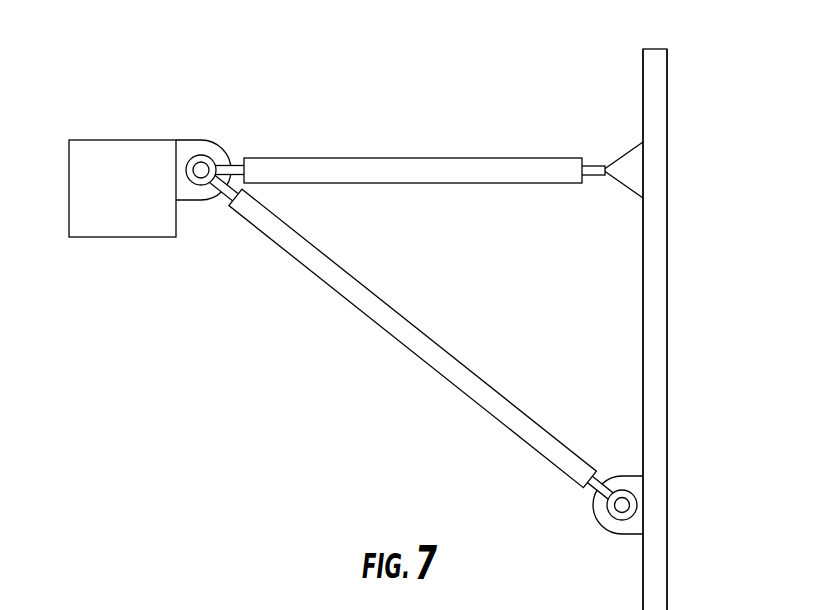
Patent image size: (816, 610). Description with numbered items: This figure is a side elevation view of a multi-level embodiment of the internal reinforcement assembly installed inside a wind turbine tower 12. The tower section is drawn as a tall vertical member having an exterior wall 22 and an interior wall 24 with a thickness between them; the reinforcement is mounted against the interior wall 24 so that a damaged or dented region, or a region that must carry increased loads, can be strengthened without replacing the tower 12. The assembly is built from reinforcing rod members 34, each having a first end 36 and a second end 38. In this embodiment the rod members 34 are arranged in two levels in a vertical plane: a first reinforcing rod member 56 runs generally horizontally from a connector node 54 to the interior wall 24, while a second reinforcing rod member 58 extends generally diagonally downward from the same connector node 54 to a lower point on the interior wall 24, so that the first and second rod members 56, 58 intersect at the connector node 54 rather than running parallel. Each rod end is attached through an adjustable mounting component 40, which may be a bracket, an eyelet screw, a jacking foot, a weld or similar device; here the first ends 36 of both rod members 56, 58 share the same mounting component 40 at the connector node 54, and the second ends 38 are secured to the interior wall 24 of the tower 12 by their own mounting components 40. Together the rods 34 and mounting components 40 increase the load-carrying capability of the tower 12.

The wind turbine tower 12 is at (670, 99).
The exterior wall 22 is at (668, 238).
The interior wall 24 is at (643, 287).
The reinforcing rod members 34 is at (411, 280).
The first end 36 is at (256, 157).
The second end 38 is at (565, 157).
The adjustable mounting component 40 is at (195, 135).
The connector node 54 is at (107, 137).
The first reinforcing rod members 56 is at (413, 172).
The second reinforcing rod members 58 is at (442, 362).